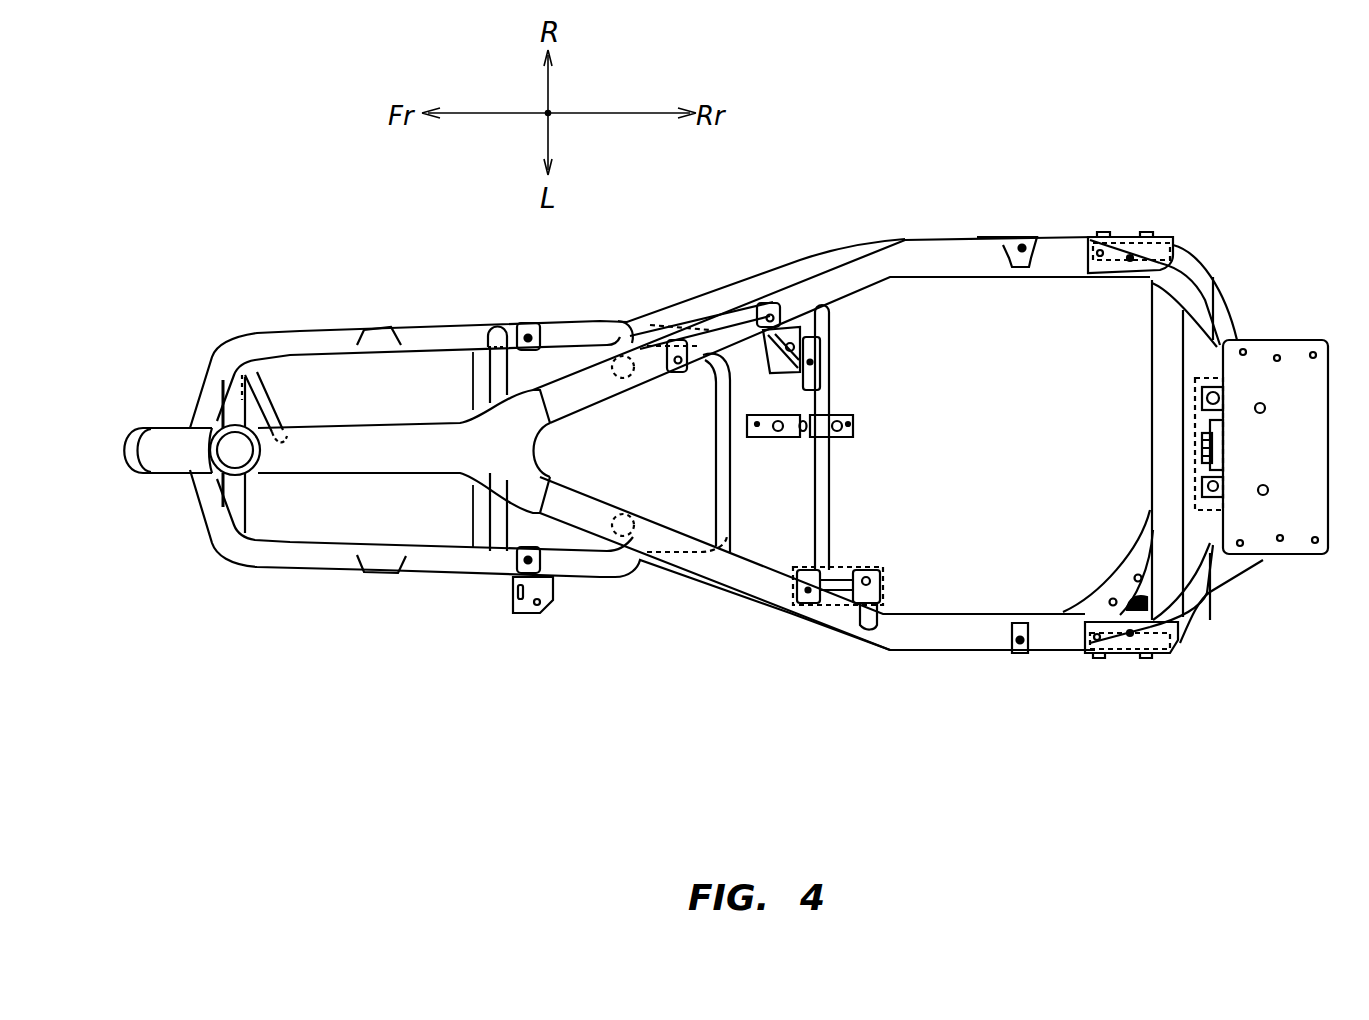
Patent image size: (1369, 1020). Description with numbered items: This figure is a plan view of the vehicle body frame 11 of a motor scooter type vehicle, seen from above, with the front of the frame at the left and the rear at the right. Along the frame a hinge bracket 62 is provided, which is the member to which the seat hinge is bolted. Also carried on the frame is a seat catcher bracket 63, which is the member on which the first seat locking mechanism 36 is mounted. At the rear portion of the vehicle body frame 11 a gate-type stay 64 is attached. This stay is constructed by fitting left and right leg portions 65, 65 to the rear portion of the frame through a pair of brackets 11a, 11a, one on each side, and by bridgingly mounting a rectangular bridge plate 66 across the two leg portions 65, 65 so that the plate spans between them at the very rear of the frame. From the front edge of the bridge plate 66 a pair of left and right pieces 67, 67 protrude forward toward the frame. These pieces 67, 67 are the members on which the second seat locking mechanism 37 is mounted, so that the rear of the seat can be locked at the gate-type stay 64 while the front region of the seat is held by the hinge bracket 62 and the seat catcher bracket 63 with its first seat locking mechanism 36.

The vehicle body frame 11 is at (704, 583).
The bracket 11a is at (1130, 237).
The first seat locking mechanism 36 is at (845, 605).
The second seat locking mechanism 37 is at (1190, 446).
The hinge bracket 62 is at (727, 303).
The seat catcher bracket 63 is at (868, 568).
The gate-type stay 64 is at (1345, 208).
The leg portion 65 is at (1203, 287).
The bridge plate 66 is at (1283, 410).
The piece 67 is at (1200, 399).